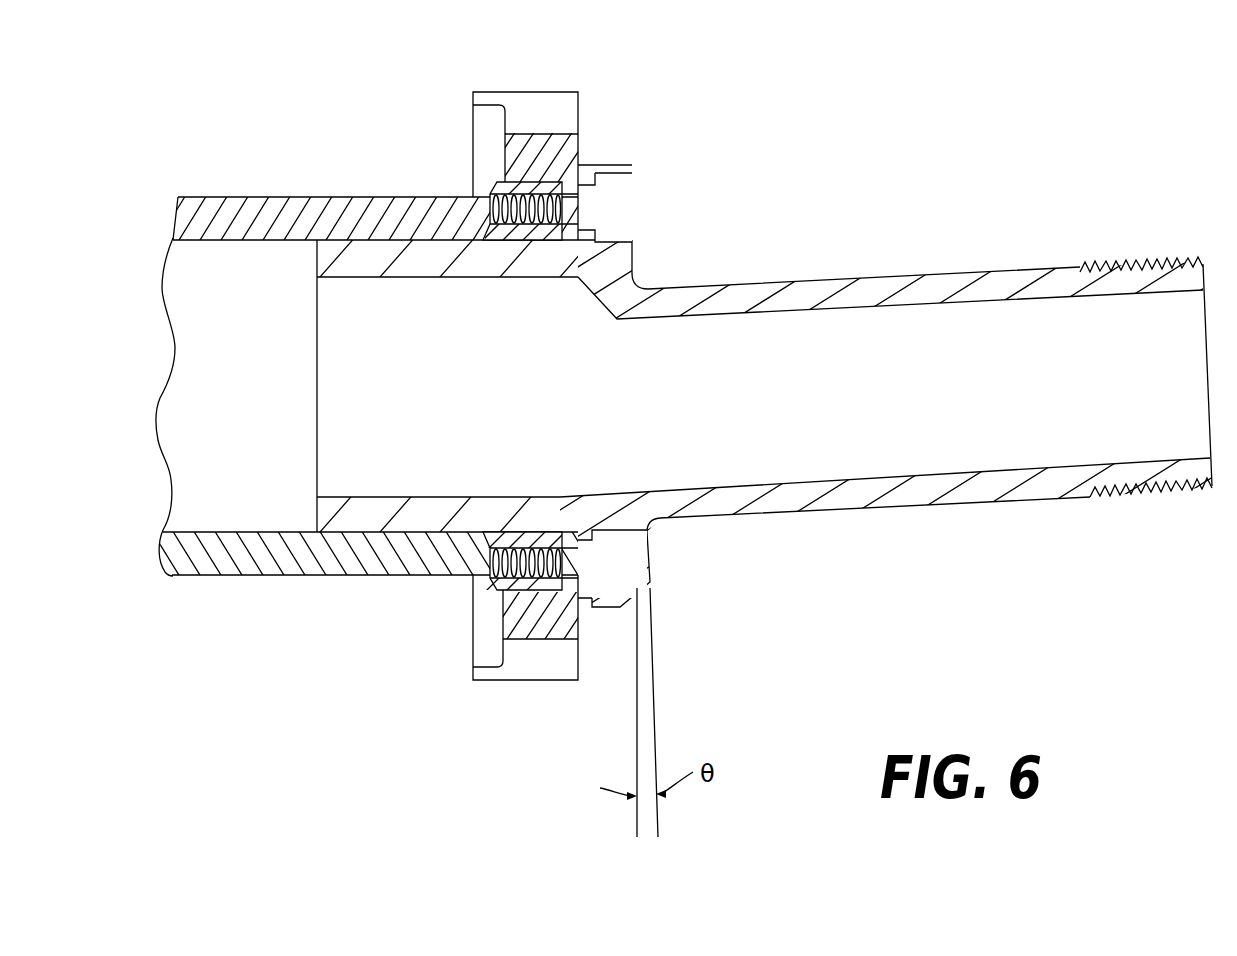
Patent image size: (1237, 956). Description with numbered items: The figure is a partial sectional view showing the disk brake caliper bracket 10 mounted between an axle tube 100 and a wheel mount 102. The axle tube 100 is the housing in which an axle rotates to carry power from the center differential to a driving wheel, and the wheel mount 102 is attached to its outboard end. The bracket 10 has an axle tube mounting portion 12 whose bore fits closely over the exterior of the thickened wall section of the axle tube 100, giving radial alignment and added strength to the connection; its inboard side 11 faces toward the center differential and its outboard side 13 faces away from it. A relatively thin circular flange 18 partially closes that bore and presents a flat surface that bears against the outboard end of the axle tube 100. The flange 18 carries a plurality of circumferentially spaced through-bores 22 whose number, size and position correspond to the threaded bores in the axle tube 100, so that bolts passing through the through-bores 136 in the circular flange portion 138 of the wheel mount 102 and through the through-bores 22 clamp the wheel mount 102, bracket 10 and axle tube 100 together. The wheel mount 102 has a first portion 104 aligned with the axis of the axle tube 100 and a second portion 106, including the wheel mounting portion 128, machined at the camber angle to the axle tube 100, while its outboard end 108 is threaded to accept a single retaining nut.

The disk brake caliper bracket 10 is at (558, 370).
The inboard side 11 is at (472, 170).
The axle tube mounting portion 12 is at (545, 148).
The outboard side 13 is at (580, 133).
The circular flange 18 is at (580, 172).
The through-bores 22 is at (575, 212).
The axle tube 100 is at (340, 208).
The wheel mount 102 is at (745, 382).
The first portion 104 is at (370, 252).
The second portion 106 is at (760, 287).
The outboard end 108 is at (1140, 268).
The wheel mounting portion 128 is at (905, 280).
The through-bores 136 is at (600, 232).
The circular flange portion 138 is at (632, 165).